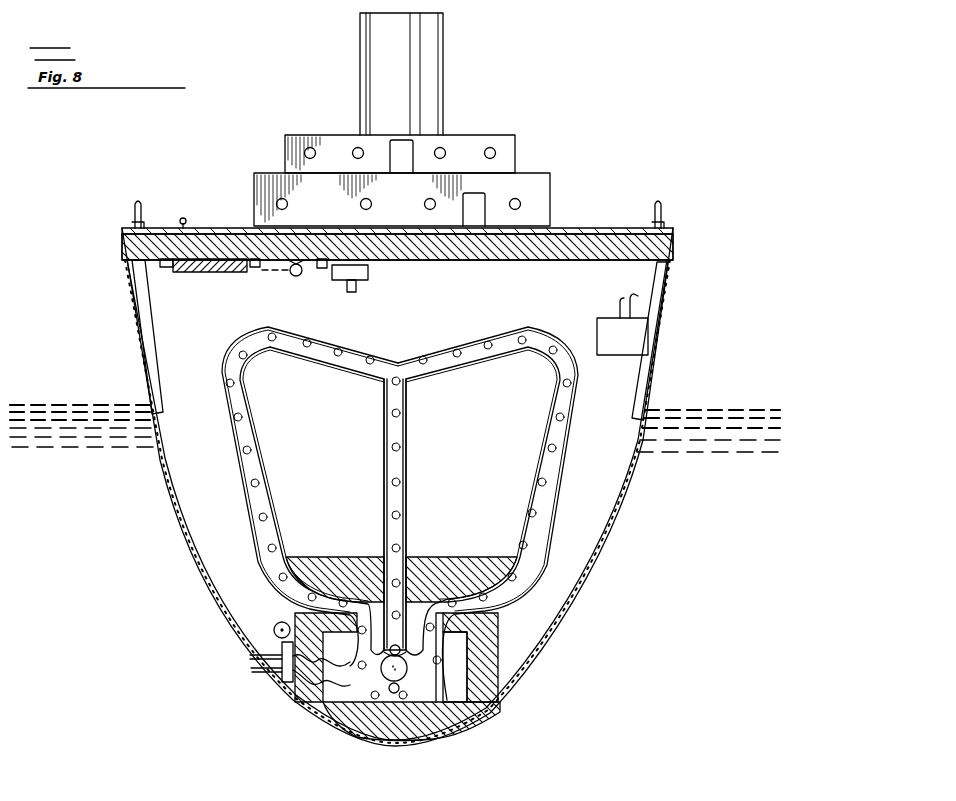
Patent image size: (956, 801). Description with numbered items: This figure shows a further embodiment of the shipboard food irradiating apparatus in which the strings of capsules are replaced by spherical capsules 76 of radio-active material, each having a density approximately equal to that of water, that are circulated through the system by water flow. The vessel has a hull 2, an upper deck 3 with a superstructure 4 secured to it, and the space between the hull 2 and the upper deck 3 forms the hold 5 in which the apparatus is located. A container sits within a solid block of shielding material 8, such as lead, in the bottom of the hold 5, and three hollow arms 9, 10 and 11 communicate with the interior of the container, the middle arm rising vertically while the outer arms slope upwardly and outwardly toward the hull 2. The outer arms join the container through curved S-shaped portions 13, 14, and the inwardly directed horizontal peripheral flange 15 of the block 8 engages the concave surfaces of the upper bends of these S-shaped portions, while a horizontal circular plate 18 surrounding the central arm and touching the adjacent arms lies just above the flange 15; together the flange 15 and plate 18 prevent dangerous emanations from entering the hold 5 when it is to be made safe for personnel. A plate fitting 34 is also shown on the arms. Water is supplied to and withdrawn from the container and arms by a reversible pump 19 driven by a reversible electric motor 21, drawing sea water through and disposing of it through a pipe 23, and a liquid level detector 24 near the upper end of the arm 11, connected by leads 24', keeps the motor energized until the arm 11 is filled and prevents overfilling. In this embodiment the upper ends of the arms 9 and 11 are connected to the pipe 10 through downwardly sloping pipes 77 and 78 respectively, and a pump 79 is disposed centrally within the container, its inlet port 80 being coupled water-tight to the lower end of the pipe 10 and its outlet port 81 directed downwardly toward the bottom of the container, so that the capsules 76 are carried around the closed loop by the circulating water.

The hull 2 is at (660, 356).
The upper deck 3 is at (600, 228).
The superstructure 4 is at (555, 163).
The hold 5 is at (610, 374).
The solid block of shielding material 8 is at (488, 679).
The hollow arm 9 is at (268, 452).
The hollow arm 10 is at (407, 456).
The hollow arm 11 is at (542, 452).
The S-shaped portion 13 is at (377, 600).
The S-shaped portion 14 is at (419, 598).
The inwardly directed horizontal peripheral flange 15 is at (335, 633).
The horizontal circular plate 18 is at (350, 556).
The reversible pump 19 is at (282, 648).
The reversible electric motor 21 is at (275, 626).
The pipe 23 is at (256, 664).
The liquid level detector 24 is at (607, 334).
The leads 24' is at (617, 302).
The plate fitting 34 is at (490, 258).
The spherical capsules 76 is at (401, 516).
The downwardly sloping pipe 77 is at (356, 346).
The downwardly sloping pipe 78 is at (470, 342).
The pump 79 is at (407, 670).
The inlet port 80 is at (392, 647).
The outlet port 81 is at (400, 688).